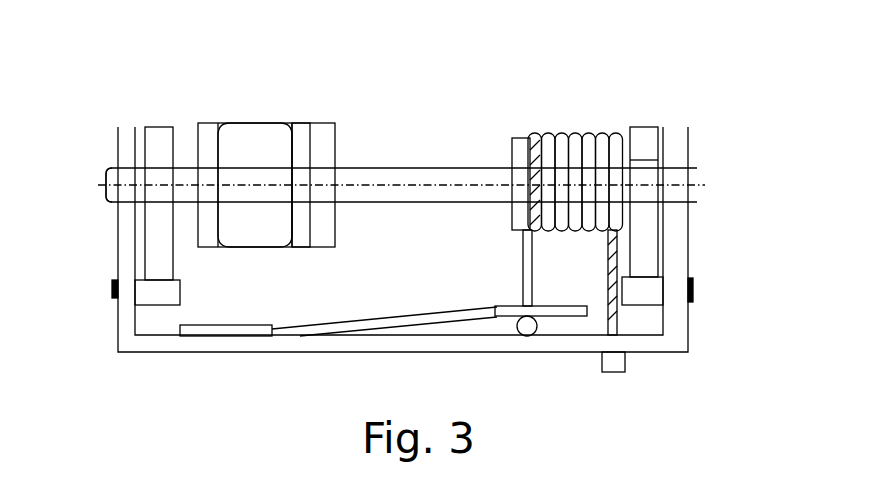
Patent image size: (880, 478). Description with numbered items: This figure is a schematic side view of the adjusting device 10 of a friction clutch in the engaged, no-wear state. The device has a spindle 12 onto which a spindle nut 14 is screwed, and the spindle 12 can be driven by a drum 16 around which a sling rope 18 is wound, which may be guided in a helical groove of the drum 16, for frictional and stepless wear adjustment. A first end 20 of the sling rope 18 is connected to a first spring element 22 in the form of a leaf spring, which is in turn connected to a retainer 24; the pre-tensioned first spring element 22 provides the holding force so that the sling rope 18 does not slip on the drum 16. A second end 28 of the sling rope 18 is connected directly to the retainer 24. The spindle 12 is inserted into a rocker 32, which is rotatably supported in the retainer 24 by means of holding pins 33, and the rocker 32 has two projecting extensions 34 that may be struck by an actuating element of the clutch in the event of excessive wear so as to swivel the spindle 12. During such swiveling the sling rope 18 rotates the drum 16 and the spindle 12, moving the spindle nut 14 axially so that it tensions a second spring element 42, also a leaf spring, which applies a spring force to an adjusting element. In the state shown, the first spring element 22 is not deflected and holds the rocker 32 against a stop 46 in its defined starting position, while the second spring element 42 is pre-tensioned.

The adjusting device 10 is at (128, 102).
The spindle 12 is at (393, 167).
The spindle nut 14 is at (254, 122).
The drum 16 is at (510, 136).
The sling rope 18 is at (625, 268).
The first end 20 is at (527, 336).
The first spring element 22 is at (507, 313).
The retainer 24 is at (130, 244).
The second end 28 is at (613, 374).
The rocker 32 is at (150, 158).
The holding pins 33 is at (110, 190).
The projecting extension 34 is at (647, 140).
The second spring element 42 is at (298, 136).
The stop 46 is at (133, 300).